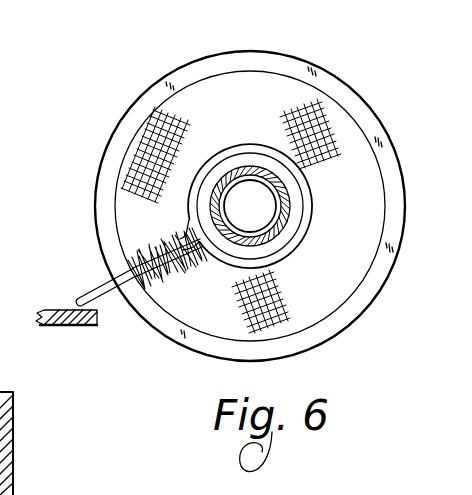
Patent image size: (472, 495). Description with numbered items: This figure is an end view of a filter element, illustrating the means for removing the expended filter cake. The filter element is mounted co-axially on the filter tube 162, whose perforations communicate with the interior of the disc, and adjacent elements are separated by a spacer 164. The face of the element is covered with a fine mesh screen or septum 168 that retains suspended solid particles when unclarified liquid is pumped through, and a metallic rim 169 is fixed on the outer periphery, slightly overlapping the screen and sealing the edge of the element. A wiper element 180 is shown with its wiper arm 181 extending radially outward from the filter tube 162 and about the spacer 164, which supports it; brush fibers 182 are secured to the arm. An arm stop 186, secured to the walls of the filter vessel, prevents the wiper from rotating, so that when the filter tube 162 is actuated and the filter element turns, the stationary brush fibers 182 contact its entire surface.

The filter tube 162 is at (273, 236).
The spacer 164 is at (294, 210).
The fine mesh screen or septum 168 is at (284, 84).
The metallic rim 169 is at (254, 48).
The wiper element 180 is at (107, 308).
The wiper arm 181 is at (243, 145).
The brush fibers 182 is at (173, 268).
The arm stop 186 is at (52, 304).